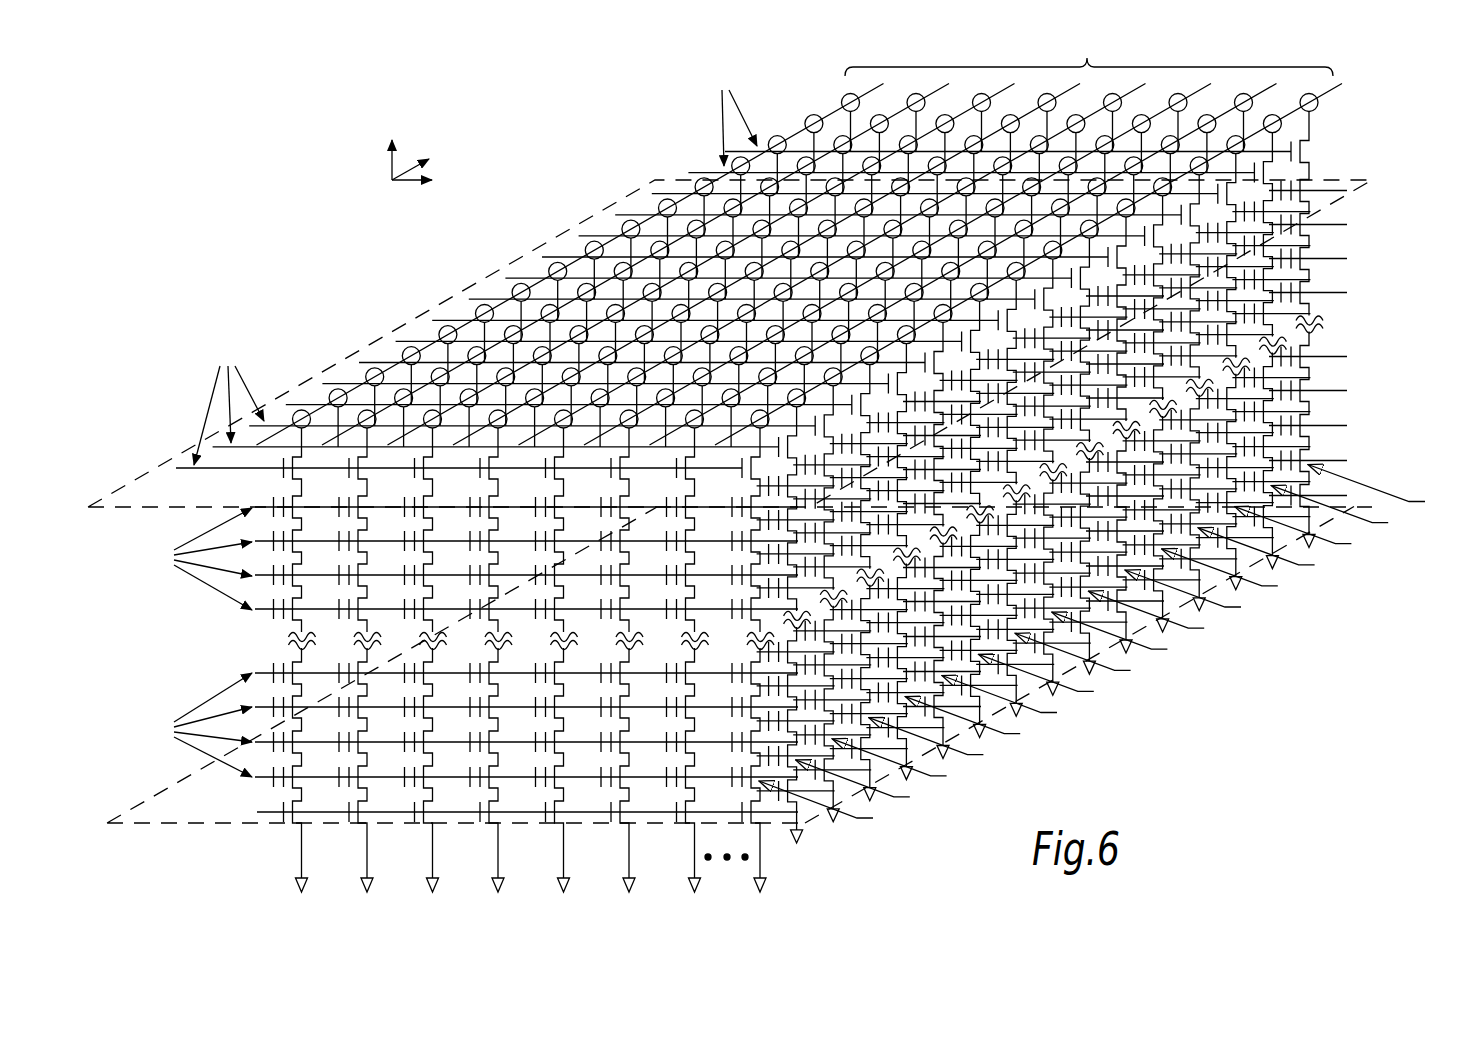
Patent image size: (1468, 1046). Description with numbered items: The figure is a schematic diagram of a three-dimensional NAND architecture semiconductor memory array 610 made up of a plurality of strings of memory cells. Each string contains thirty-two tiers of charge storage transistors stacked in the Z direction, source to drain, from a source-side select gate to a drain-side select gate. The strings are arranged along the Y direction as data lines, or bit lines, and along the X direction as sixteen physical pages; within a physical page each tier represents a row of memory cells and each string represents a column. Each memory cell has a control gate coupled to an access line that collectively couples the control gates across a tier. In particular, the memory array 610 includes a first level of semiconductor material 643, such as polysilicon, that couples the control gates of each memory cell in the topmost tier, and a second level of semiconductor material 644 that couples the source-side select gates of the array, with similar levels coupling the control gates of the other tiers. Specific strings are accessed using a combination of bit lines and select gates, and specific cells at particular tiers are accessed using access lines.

The 3D NAND architecture semiconductor memory array 610 is at (1381, 122).
The first level of semiconductor material 643 is at (150, 470).
The second level of semiconductor material 644 is at (217, 825).